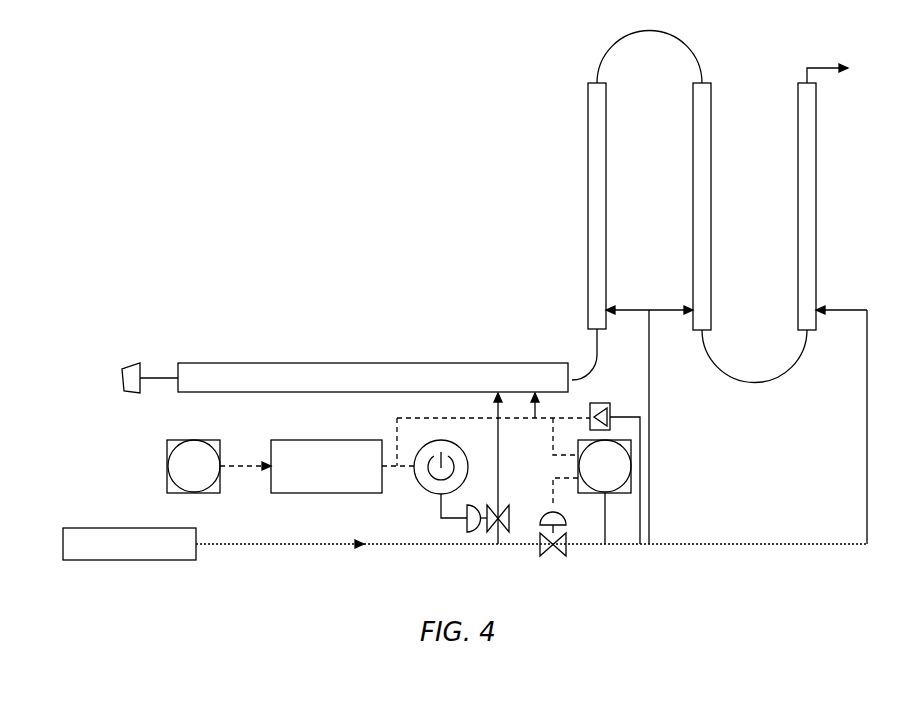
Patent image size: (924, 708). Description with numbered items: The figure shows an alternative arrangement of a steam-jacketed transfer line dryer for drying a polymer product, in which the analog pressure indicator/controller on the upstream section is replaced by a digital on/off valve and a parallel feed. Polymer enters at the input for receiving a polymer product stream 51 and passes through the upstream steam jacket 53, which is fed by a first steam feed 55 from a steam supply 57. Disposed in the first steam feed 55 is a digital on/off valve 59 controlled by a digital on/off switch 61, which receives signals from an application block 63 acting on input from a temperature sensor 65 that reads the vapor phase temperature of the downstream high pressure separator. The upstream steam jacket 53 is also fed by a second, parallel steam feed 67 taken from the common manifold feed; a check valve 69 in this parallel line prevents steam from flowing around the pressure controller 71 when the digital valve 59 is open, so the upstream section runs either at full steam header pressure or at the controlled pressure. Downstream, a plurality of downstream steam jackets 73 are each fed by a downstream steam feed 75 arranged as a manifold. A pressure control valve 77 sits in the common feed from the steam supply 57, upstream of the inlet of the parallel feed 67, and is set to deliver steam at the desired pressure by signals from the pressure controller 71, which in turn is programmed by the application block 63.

The polymer product stream input 51 is at (128, 365).
The upstream steam jacket 53 is at (241, 363).
The first steam feed 55 is at (503, 470).
The steam supply 57 is at (165, 529).
The digital on/off valve 59 is at (474, 533).
The digital on/off switch 61 is at (444, 441).
The application block 63 is at (328, 494).
The temperature sensor 65 is at (168, 467).
The second parallel steam feed 67 is at (643, 452).
The check valve 69 is at (599, 404).
The pressure controller 71 is at (597, 494).
The downstream steam jackets 73 is at (588, 205).
The downstream steam feed 75 is at (670, 310).
The pressure control valve 77 is at (571, 552).